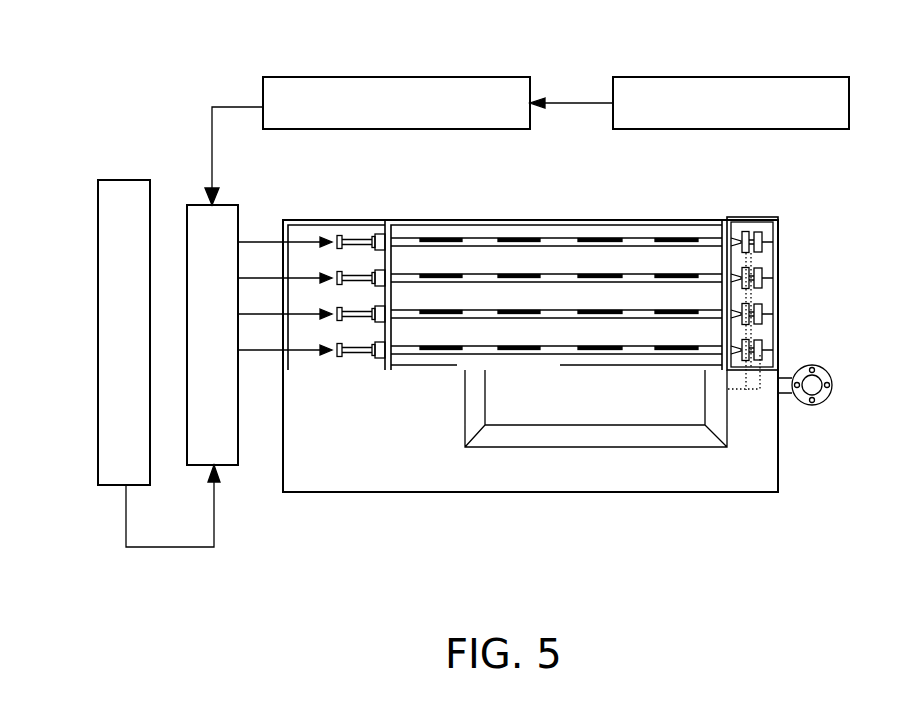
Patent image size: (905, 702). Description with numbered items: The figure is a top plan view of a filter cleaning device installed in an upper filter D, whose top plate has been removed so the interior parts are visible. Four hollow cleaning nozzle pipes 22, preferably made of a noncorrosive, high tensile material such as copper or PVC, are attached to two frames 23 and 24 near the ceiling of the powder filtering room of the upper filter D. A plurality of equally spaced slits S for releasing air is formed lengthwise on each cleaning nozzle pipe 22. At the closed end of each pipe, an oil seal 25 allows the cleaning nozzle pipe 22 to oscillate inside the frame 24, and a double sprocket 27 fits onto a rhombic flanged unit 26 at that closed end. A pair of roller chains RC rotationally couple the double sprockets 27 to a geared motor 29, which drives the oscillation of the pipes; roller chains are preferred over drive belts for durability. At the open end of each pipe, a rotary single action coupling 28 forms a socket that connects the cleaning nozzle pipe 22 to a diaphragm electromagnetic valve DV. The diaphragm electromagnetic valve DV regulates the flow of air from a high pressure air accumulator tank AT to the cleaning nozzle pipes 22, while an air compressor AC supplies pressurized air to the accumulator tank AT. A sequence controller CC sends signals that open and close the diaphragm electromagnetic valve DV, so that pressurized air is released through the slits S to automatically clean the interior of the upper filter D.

The cleaning nozzle pipe 22 is at (553, 345).
The frame 23 is at (417, 219).
The frame 24 is at (727, 217).
The oil seal 25 is at (375, 239).
The rhombic flanged unit 26 is at (372, 278).
The double sprocket 27 is at (763, 319).
The rotary single action coupling 28 is at (352, 322).
The geared motor 29 is at (743, 388).
The slit S is at (452, 346).
The upper filter D is at (622, 475).
The sequence controller CC is at (118, 342).
The diaphragm electromagnetic valve DV is at (223, 442).
The high pressure air accumulator tank AT is at (445, 85).
The air compressor AC is at (753, 88).
The roller chain RC is at (760, 328).